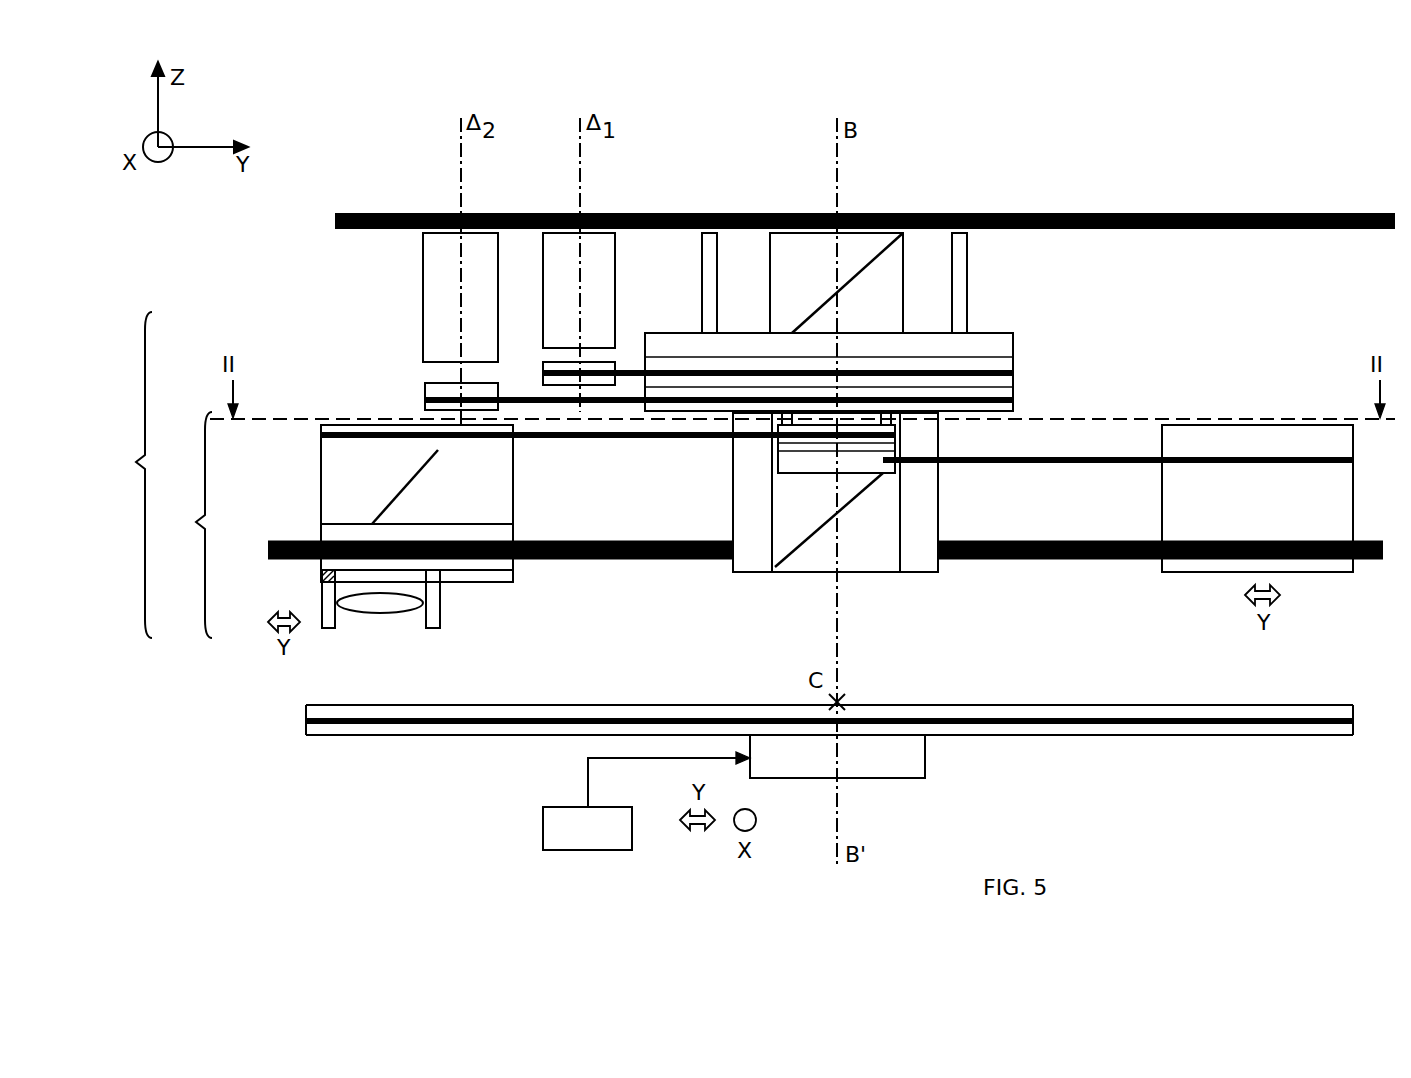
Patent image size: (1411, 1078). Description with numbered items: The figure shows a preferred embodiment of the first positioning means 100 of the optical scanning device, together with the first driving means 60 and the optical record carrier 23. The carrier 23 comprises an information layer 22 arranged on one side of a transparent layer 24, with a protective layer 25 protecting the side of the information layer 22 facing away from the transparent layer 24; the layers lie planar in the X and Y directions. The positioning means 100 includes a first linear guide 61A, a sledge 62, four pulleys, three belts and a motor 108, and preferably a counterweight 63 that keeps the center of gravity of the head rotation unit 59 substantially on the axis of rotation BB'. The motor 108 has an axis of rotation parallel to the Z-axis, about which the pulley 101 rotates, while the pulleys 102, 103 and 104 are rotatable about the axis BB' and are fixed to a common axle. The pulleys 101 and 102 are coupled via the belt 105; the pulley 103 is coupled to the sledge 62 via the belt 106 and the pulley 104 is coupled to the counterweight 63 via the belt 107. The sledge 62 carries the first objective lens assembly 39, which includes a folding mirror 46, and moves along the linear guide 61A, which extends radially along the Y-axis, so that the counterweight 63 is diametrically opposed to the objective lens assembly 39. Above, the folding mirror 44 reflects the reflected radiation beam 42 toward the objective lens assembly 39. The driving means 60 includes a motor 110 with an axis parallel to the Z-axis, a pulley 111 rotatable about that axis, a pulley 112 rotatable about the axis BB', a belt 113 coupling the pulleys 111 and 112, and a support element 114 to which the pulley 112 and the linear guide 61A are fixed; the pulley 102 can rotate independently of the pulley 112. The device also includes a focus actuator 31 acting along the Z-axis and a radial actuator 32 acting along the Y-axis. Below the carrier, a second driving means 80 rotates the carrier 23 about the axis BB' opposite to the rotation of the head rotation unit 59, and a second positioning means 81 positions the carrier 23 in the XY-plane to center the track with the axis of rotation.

The first driving means 60 is at (350, 272).
The motor 110 is at (423, 300).
The motor 108 is at (615, 258).
The folding mirror 44 is at (865, 268).
The pulley 101 is at (543, 368).
The belt 105 is at (630, 368).
The pulley 102 is at (1013, 362).
The pulley 112 is at (1013, 393).
The pulley 111 is at (425, 385).
The belt 113 is at (425, 400).
The belt 106 is at (556, 440).
The belt 107 is at (1035, 465).
The pulley 103 is at (898, 428).
The pulley 104 is at (770, 468).
The support element 114 is at (917, 572).
The sledge 62 is at (321, 460).
The folding mirror 46 is at (372, 506).
The first linear guide 61A is at (651, 562).
The focus actuator 31 is at (328, 599).
The radial actuator 32 is at (440, 615).
The reflected radiation beam 42 is at (390, 618).
The counterweight 63 is at (1188, 572).
The first positioning means 100 is at (1242, 340).
The head rotation unit 59 is at (128, 476).
The first objective lens assembly 39 is at (188, 536).
The optical record carrier 23 is at (1357, 695).
The information layer 22 is at (1140, 725).
The transparent layer 24 is at (1215, 715).
The protective layer 25 is at (1284, 732).
The second driving means 80 is at (912, 778).
The second positioning means 81 is at (543, 830).